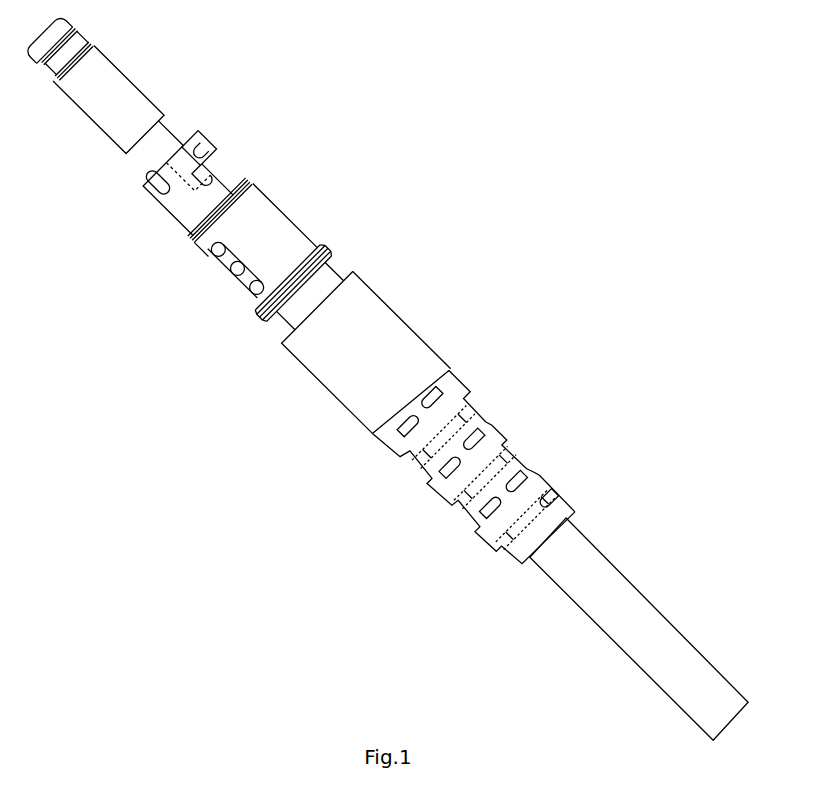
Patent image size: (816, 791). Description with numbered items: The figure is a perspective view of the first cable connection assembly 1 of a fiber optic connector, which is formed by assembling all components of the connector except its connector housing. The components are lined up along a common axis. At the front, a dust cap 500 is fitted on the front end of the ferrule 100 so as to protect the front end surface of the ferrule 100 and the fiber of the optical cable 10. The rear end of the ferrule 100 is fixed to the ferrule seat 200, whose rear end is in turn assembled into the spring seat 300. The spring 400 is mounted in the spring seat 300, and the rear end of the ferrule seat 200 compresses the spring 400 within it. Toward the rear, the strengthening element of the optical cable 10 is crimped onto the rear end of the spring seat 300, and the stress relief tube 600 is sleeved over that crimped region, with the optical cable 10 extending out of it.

The first cable connection assembly 1 is at (273, 431).
The optical cable 10 is at (608, 580).
The ferrule 100 is at (152, 157).
The ferrule seat 200 is at (203, 145).
The spring seat 300 is at (275, 225).
The spring 400 is at (233, 280).
The dust cap 500 is at (118, 90).
The stress relief tube 600 is at (378, 322).